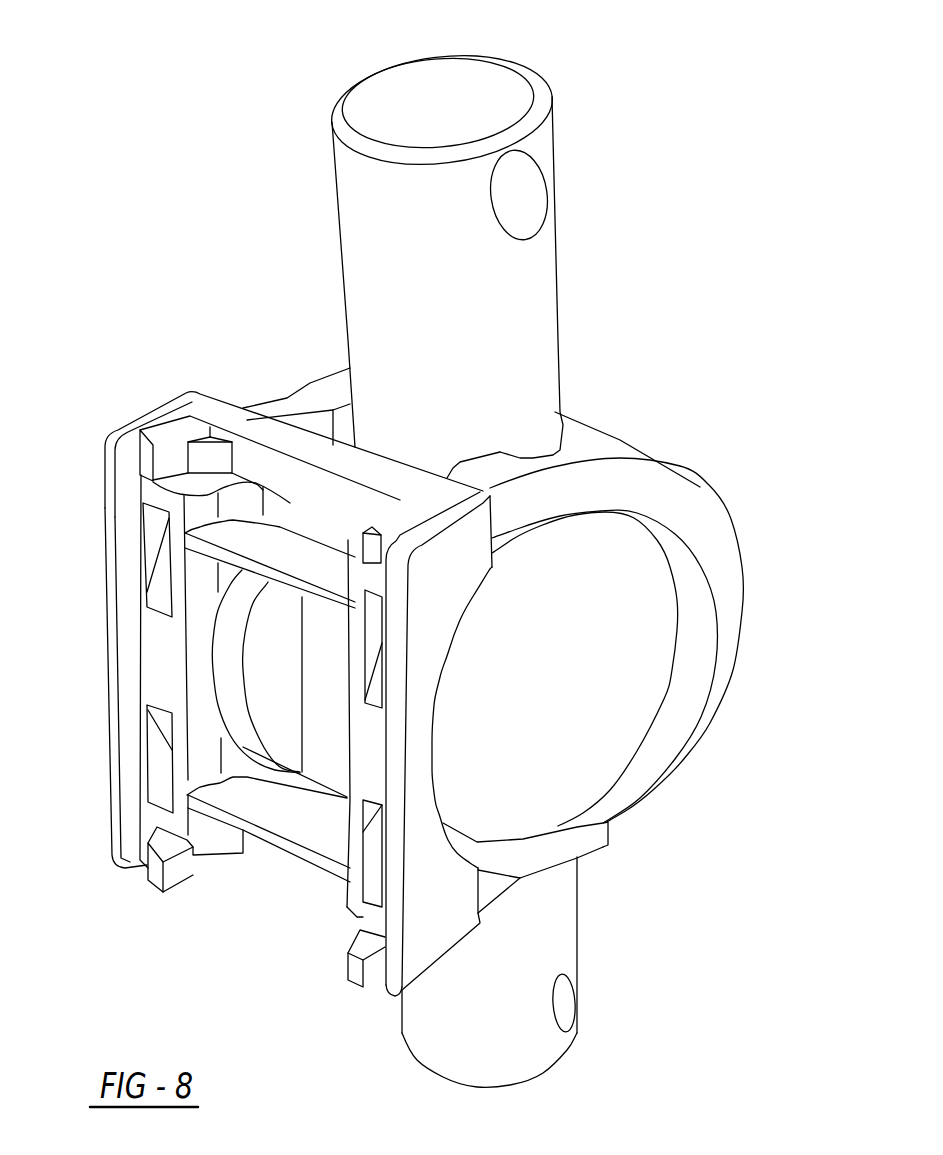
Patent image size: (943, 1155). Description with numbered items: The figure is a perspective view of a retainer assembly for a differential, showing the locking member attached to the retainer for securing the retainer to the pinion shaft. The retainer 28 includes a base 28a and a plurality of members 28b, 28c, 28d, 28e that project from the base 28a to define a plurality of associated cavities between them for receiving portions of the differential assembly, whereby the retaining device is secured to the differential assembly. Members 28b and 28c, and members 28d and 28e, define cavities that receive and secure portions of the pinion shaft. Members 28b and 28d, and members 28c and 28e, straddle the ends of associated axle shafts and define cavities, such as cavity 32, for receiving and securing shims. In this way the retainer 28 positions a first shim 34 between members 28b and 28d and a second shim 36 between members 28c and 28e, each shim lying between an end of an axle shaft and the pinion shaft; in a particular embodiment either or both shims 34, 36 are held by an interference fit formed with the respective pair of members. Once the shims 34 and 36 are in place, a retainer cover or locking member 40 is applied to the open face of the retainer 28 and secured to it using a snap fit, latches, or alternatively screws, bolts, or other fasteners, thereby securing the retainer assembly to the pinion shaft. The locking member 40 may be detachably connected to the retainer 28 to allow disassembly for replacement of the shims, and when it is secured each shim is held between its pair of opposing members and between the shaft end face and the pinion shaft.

The retainer 28 is at (736, 517).
The base 28a is at (742, 605).
The member 28b is at (140, 467).
The member 28c is at (362, 550).
The member 28d is at (150, 883).
The member 28e is at (348, 980).
The cavity 32 is at (623, 778).
The first shim 34 is at (253, 705).
The second shim 36 is at (608, 683).
The locking member 40 is at (110, 808).